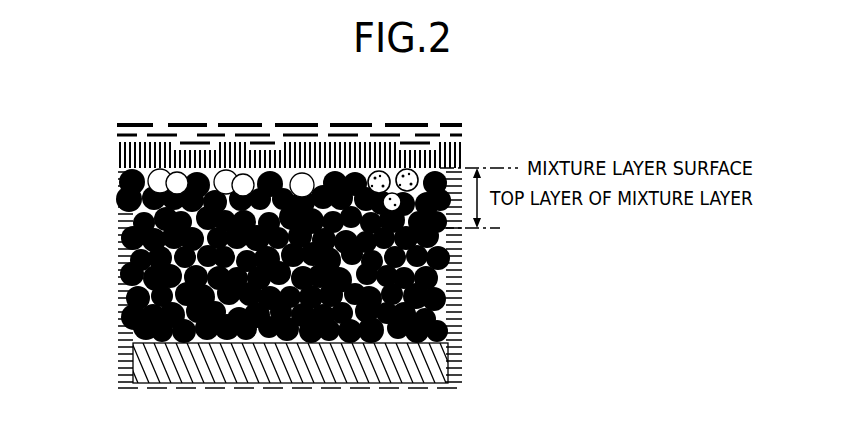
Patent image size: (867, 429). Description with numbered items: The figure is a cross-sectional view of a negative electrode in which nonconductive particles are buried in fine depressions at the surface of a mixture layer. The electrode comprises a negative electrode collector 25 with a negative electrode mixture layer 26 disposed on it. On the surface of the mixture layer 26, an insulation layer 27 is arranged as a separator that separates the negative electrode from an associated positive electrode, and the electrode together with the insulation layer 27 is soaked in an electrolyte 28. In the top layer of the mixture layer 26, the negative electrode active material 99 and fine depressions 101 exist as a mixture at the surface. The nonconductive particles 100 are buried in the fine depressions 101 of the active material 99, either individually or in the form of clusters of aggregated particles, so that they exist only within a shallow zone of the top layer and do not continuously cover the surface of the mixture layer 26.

The negative electrode collector 25 is at (133, 360).
The negative electrode mixture layer 26 is at (104, 168).
The insulation layer 27 is at (428, 168).
The electrolyte 28 is at (462, 158).
The negative electrode active material 99 is at (438, 169).
The nonconductive particles 100 is at (164, 176).
The fine depressions 101 is at (383, 168).